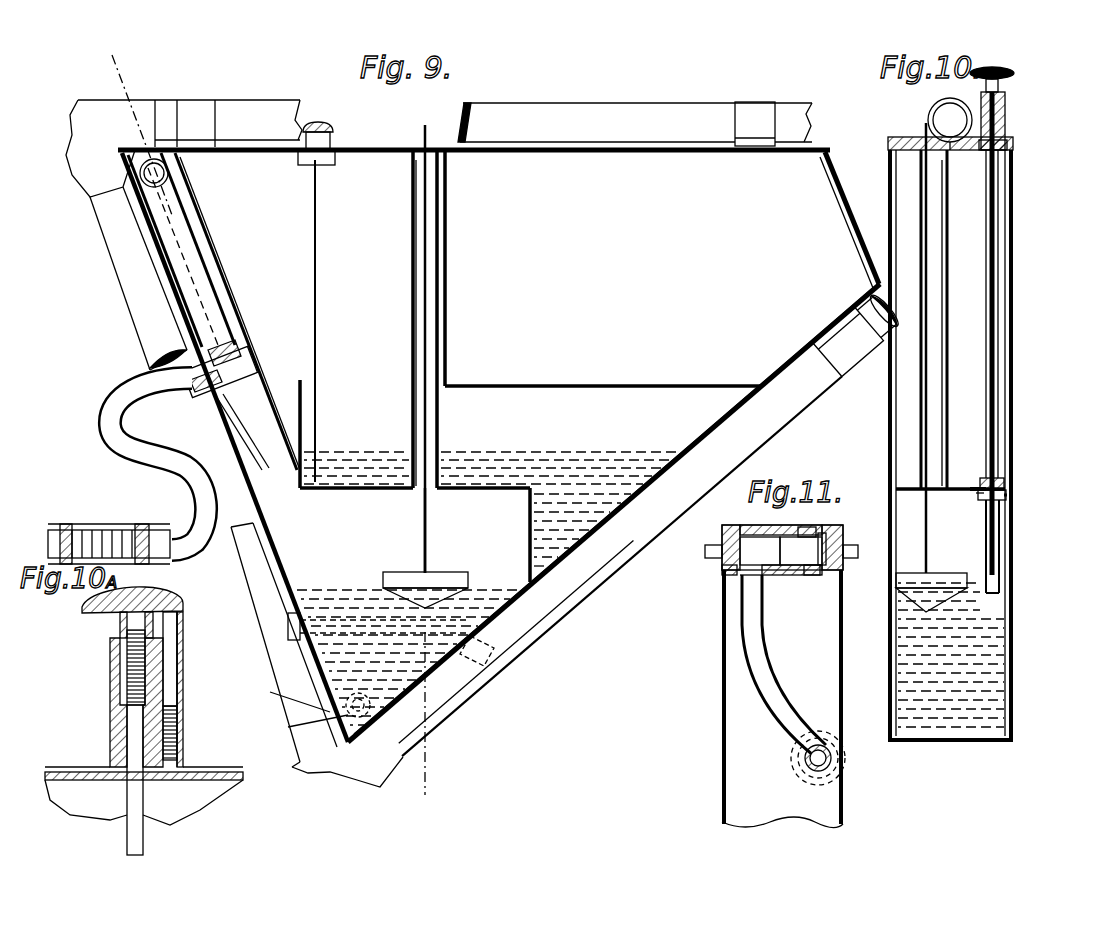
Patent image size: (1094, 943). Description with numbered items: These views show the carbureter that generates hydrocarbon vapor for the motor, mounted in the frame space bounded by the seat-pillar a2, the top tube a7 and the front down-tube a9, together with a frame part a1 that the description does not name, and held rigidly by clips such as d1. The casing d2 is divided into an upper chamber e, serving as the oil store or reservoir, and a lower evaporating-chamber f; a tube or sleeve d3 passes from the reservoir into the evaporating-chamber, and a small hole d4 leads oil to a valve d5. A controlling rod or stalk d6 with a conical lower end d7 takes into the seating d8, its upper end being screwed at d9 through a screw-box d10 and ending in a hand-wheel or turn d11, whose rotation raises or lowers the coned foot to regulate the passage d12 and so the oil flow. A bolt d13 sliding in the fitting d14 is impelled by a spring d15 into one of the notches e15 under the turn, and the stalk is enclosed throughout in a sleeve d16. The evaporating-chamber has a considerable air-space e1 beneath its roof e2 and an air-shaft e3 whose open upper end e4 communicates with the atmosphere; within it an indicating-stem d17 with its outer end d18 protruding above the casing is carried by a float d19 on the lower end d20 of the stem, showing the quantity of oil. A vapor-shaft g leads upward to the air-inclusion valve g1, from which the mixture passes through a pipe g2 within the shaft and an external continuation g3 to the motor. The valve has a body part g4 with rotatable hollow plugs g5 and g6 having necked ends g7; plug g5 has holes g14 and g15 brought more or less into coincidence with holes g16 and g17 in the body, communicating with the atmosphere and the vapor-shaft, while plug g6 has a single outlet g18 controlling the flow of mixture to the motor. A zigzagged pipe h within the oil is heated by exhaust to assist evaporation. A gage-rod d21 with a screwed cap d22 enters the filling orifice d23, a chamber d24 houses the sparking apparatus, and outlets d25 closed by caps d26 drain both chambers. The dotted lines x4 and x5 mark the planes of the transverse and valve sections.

In FIG. 9, the clip d1 is at (212, 108).
In FIG. 10, the clip d1 is at (952, 100).
In FIG. 9, the casing d2 is at (660, 475).
In FIG. 10, the tube or sleeve d3 is at (1002, 524).
In FIG. 10, the small hole d4 is at (1004, 470).
In FIG. 10, the valve d5 is at (1006, 493).
In FIG. 10, the controlling rod or stalk d6 is at (1000, 380).
In FIG. 10A, the controlling rod or stalk d6 is at (118, 790).
In FIG. 10, the conical lower end d7 is at (978, 493).
In FIG. 10, the seating d8 is at (982, 500).
In FIG. 10, the screwed upper end d9 is at (1003, 110).
In FIG. 10A, the screwed upper end d9 is at (130, 655).
In FIG. 10, the screw-box d10 is at (1005, 130).
In FIG. 10A, the screw-box d10 is at (122, 680).
In FIG. 10, the hand-wheel or turn d11 is at (1000, 72).
In FIG. 10A, the hand-wheel or turn d11 is at (140, 588).
In FIG. 10, the passage d12 is at (1008, 500).
In FIG. 10A, the bolt d13 is at (168, 664).
In FIG. 10A, the fitting d14 is at (186, 698).
In FIG. 10A, the spring d15 is at (172, 730).
In FIG. 10, the sleeve d16 is at (996, 252).
In FIG. 10A, the sleeve d16 is at (144, 800).
In FIG. 9, the indicating-stem d17 is at (428, 345).
In FIG. 10, the indicating-stem d17 is at (929, 324).
In FIG. 9, the outer end of indicating-stem d18 is at (427, 128).
In FIG. 10, the outer end of indicating-stem d18 is at (924, 130).
In FIG. 9, the float d19 is at (462, 578).
In FIG. 10, the float d19 is at (940, 600).
In FIG. 9, the lower end of indicating-stem d20 is at (428, 548).
In FIG. 10, the lower end of indicating-stem d20 is at (924, 555).
In FIG. 9, the gage-rod d21 is at (318, 278).
In FIG. 9, the screwed cap d22 is at (335, 114).
In FIG. 9, the orifice d23 is at (300, 162).
In FIG. 9, the chamber d24 is at (603, 268).
In FIG. 9, the outlet d25 is at (363, 692).
In FIG. 9, the screw plug or cap d26 is at (447, 681).
In FIG. 9, the upper chamber e is at (492, 455).
In FIG. 10, the upper chamber e is at (950, 439).
In FIG. 9, the air-space e1 is at (483, 535).
In FIG. 10, the air-space e1 is at (1000, 480).
In FIG. 9, the roof e2 is at (356, 450).
In FIG. 9, the air-shaft e3 is at (411, 378).
In FIG. 10, the air-shaft e3 is at (948, 284).
In FIG. 9, the open upper end e4 is at (411, 150).
In FIG. 10, the open upper end e4 is at (948, 160).
In FIG. 10A, the notches or sinkings e15 is at (180, 606).
In FIG. 9, the evaporating-chamber f is at (464, 609).
In FIG. 10, the evaporating-chamber f is at (951, 655).
In FIG. 9, the coiled or zigzagged pipe or passage h is at (365, 622).
In FIG. 9, the pipe coupling a1 is at (752, 108).
In FIG. 9, the seat-pillar a2 is at (128, 330).
In FIG. 9, the top tube a7 is at (632, 108).
In FIG. 10, the top tube a7 is at (950, 120).
In FIG. 9, the front down-tube a9 is at (622, 567).
In FIG. 9, the vapor-shaft g is at (237, 311).
In FIG. 11, the vapor-shaft g is at (782, 699).
In FIG. 9, the air-inclusion valve g1 is at (169, 175).
In FIG. 9, the pipe g2 is at (200, 270).
In FIG. 11, the pipe g2 is at (766, 663).
In FIG. 9, the external continuation g3 is at (136, 382).
In FIG. 11, the body part g4 is at (780, 578).
In FIG. 11, the rotatable hollow plug g5 is at (801, 551).
In FIG. 11, the rotatable hollow plug g6 is at (760, 551).
In FIG. 11, the necked ends g7 is at (712, 545).
In FIG. 11, the hole g14 is at (826, 536).
In FIG. 11, the hole g15 is at (818, 576).
In FIG. 11, the hole g16 is at (808, 527).
In FIG. 11, the hole g17 is at (826, 572).
In FIG. 11, the outlet g18 is at (724, 574).
In FIG. 9, the dotted line x4 is at (439, 719).
In FIG. 9, the dotted line x5 is at (142, 134).